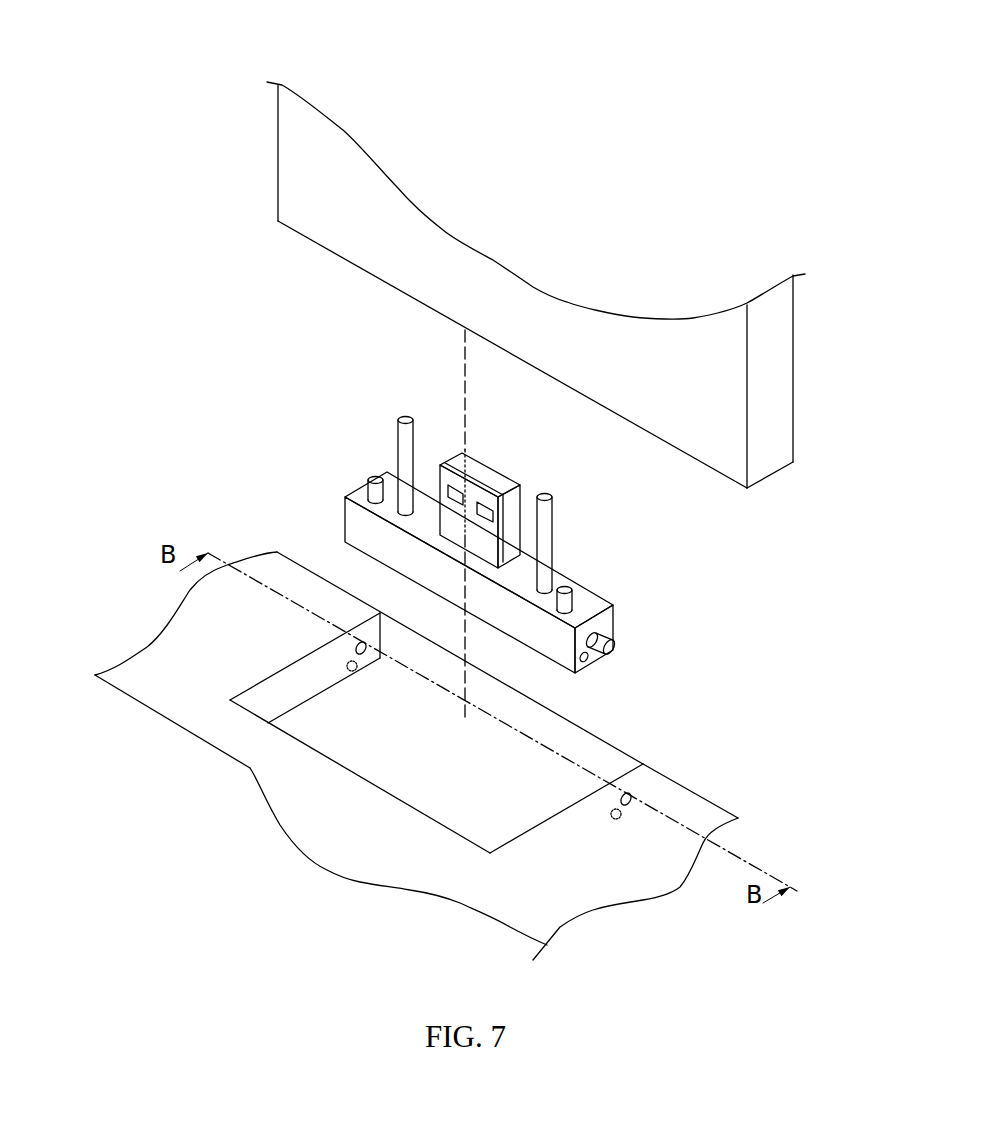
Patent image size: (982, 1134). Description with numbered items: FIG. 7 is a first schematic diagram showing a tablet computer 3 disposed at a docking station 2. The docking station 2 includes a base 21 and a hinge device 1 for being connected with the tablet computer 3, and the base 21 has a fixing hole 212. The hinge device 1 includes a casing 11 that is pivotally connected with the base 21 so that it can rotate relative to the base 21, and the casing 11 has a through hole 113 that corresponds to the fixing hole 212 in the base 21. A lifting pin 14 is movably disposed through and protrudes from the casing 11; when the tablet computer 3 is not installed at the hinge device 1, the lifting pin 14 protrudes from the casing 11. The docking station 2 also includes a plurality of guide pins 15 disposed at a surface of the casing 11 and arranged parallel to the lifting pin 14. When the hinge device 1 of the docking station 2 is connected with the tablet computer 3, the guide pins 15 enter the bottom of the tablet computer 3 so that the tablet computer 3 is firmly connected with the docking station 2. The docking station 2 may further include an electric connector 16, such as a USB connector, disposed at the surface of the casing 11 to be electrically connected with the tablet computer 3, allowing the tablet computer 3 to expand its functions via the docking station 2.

The hinge device 1 is at (320, 366).
The docking station 2 is at (146, 398).
The tablet computer 3 is at (281, 83).
The casing 11 is at (344, 522).
The lifting pin 14 is at (370, 480).
The guide pins 15 is at (404, 419).
The electric connector 16 is at (488, 466).
The base 21 is at (148, 640).
The through hole 113 is at (591, 665).
The fixing hole 212 is at (359, 675).